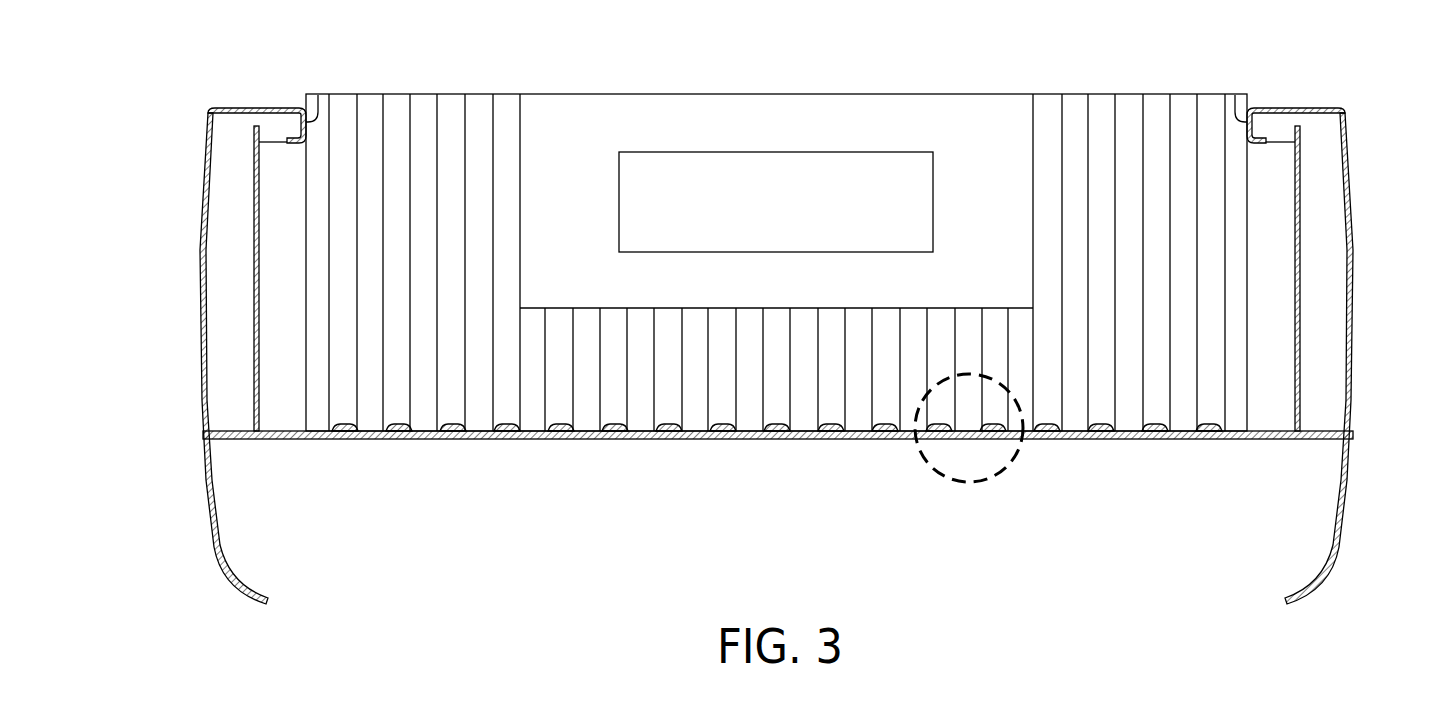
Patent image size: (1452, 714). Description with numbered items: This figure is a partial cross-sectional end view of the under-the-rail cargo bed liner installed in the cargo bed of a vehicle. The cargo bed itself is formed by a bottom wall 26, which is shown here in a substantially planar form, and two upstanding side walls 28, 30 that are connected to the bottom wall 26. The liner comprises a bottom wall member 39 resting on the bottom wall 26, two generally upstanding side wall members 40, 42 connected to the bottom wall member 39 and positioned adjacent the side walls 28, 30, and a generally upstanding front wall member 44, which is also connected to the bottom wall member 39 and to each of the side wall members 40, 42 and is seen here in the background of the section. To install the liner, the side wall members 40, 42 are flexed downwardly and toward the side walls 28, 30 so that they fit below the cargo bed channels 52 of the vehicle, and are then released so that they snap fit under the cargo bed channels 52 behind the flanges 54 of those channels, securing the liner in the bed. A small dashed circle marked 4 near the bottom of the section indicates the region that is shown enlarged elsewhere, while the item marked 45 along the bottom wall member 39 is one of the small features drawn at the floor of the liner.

The detail area shown in FIG. 4 is at (1018, 457).
The bottom wall 26 is at (372, 440).
The side wall 28 is at (200, 243).
The side wall 30 is at (1352, 240).
The bottom wall member 39 is at (424, 431).
The side wall member 40 is at (254, 331).
The side wall member 42 is at (1300, 327).
The front wall member 44 is at (778, 102).
The rib 45 is at (505, 431).
The cargo bed channel 52 is at (268, 124).
The flange 54 is at (318, 95).